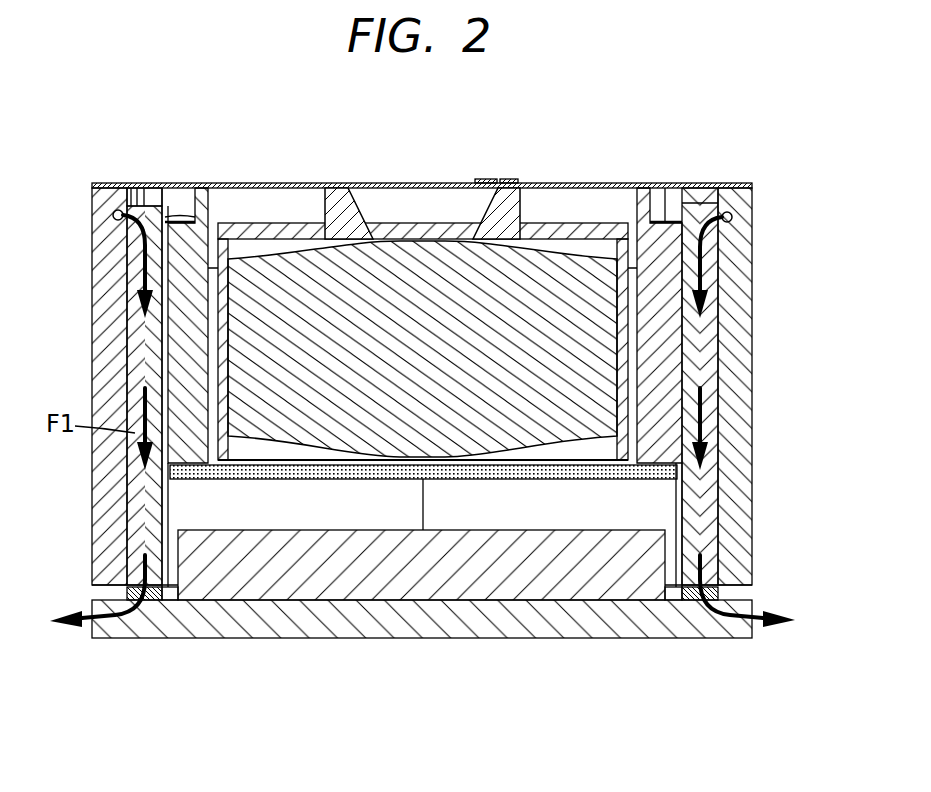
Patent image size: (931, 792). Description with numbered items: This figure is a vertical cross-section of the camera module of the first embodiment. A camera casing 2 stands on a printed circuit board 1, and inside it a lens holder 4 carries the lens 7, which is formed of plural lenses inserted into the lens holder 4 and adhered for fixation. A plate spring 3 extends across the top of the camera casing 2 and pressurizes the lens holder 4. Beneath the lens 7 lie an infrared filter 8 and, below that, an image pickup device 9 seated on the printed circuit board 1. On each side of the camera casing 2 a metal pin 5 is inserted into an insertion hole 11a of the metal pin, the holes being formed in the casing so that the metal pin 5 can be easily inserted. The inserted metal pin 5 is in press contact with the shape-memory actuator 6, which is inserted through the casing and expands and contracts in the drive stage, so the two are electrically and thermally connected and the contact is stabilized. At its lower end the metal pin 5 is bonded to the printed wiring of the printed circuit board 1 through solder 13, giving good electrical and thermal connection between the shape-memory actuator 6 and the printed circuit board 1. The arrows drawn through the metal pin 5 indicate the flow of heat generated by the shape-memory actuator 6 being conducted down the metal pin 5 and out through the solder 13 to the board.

The printed circuit board 1 is at (708, 628).
The camera casing 2 is at (752, 385).
The plate spring 3 is at (238, 183).
The lens holder 4 is at (340, 200).
The metal pin 5 is at (135, 532).
The shape-memory actuator 6 is at (113, 215).
The lens 7 is at (420, 250).
The infrared filter 8 is at (627, 482).
The image pickup device 9 is at (475, 593).
The insertion hole of the metal pin 11a is at (195, 205).
The solder 13 is at (125, 592).